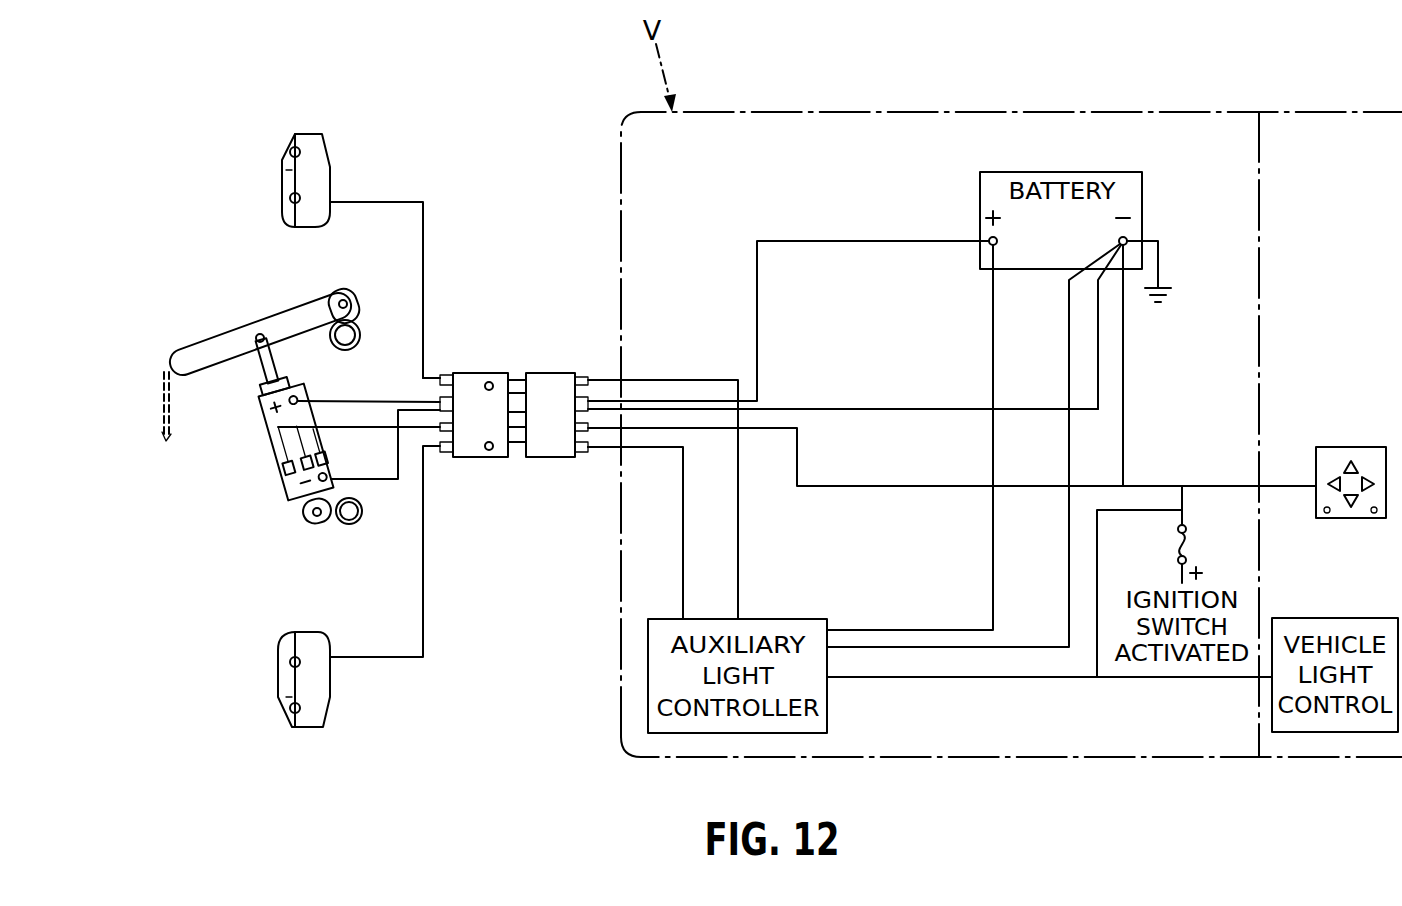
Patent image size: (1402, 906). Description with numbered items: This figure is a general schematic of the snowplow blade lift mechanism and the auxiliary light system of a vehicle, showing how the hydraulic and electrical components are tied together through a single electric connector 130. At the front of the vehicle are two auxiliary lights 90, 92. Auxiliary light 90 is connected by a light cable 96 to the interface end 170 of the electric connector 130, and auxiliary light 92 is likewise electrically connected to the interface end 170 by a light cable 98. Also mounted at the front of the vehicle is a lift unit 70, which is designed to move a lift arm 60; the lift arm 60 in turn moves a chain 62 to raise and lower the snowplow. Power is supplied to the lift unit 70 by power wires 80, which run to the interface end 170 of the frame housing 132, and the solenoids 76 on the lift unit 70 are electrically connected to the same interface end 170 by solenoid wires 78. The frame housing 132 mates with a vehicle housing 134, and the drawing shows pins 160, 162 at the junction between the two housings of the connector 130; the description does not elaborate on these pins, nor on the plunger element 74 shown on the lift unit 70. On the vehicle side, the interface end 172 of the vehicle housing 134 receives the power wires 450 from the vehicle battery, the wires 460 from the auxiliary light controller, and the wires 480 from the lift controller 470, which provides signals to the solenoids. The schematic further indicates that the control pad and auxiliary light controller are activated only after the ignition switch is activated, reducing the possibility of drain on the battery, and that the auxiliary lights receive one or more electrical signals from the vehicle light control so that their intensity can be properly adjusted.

The lift arm 60 is at (205, 340).
The chain 62 is at (162, 423).
The lift unit 70 is at (258, 429).
The switch plunger 74 is at (268, 370).
The solenoids 76 is at (280, 476).
The solenoid wires 78 is at (360, 427).
The power wires 80 is at (337, 400).
The auxiliary light 90 is at (310, 145).
The auxiliary light 92 is at (310, 715).
The light cable 96 is at (395, 200).
The light cable 98 is at (402, 658).
The electric connector 130 is at (514, 375).
The frame housing 132 is at (470, 362).
The vehicle housing 134 is at (552, 360).
The connector pins 160 is at (508, 445).
The connector pins 162 is at (523, 378).
The interface end 170 is at (440, 374).
The interface end 172 is at (578, 452).
The power wires 450 is at (758, 363).
The wires 460 is at (683, 556).
The lift controller 470 is at (1348, 444).
The wires 480 is at (798, 458).